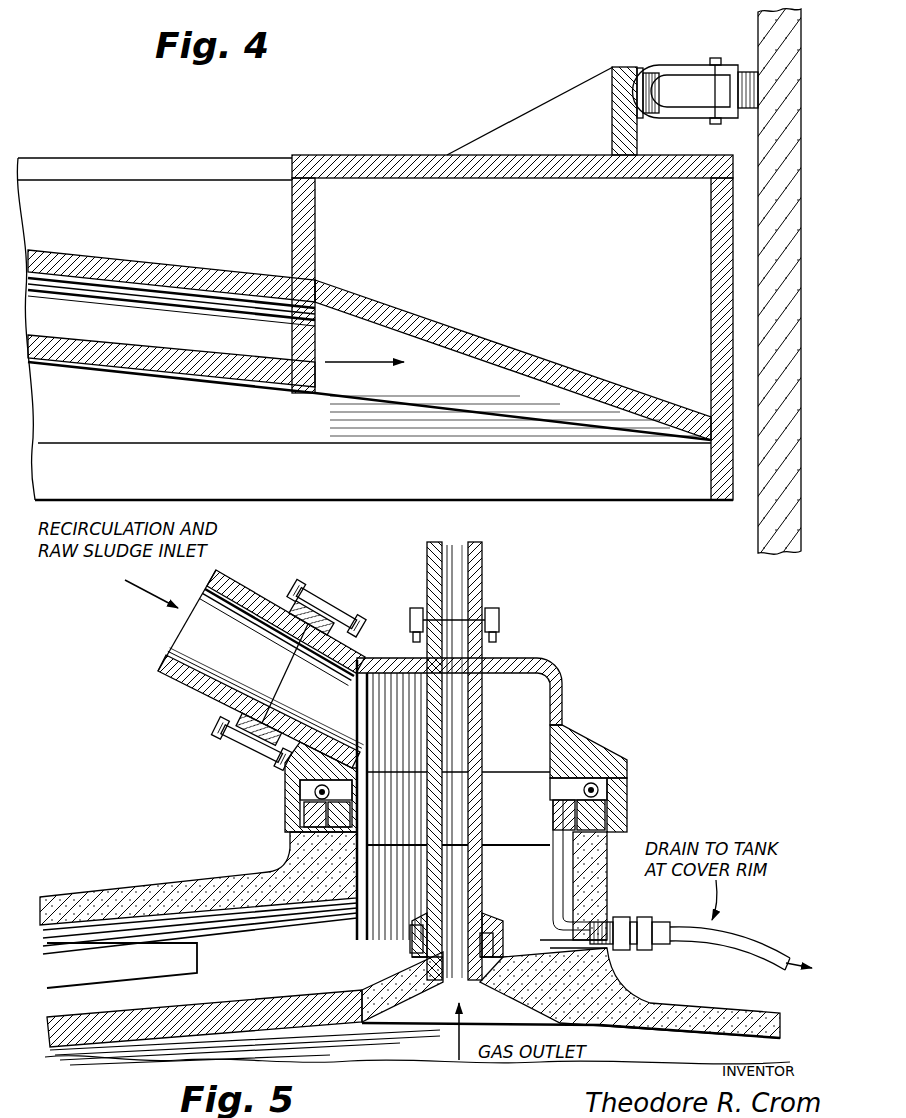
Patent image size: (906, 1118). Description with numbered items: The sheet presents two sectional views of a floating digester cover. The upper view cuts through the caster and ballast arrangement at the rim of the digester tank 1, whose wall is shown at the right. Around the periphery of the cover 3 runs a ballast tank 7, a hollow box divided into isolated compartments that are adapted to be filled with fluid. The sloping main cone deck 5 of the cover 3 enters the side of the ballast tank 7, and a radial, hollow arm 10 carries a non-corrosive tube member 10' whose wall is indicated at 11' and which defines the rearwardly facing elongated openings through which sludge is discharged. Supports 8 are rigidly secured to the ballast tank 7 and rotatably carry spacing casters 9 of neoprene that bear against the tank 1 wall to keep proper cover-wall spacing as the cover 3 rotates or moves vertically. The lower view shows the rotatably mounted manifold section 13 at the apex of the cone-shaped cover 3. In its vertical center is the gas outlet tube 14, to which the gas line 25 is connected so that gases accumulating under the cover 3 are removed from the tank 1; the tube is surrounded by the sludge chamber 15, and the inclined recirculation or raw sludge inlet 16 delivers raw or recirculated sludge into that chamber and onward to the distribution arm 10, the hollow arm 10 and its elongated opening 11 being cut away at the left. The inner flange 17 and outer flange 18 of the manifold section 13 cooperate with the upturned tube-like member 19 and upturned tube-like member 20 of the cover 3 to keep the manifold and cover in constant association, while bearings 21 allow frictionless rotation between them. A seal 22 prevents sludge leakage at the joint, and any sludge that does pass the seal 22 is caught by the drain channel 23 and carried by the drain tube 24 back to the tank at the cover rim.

In FIG. 4, the digester tank 1 is at (757, 44).
In FIG. 4, the cover 3 is at (80, 250).
In FIG. 5, the cover 3 is at (741, 1008).
In FIG. 4, the main cone deck 5 is at (181, 268).
In FIG. 4, the ballast tank 7 is at (428, 200).
In FIG. 4, the supports 8 is at (629, 67).
In FIG. 4, the spacing casters 9 is at (697, 67).
In FIG. 5, the radial hollow arm 10 is at (198, 893).
In FIG. 4, the tube member 10' is at (171, 352).
In FIG. 5, the tube member 10' is at (245, 1008).
In FIG. 5, the elongated opening 11 is at (112, 966).
In FIG. 4, the opening 11' is at (369, 399).
In FIG. 5, the manifold section 13 is at (598, 736).
In FIG. 5, the gas outlet tube 14 is at (466, 648).
In FIG. 5, the sludge chamber 15 is at (540, 695).
In FIG. 5, the recirculation or raw sludge inlet 16 is at (353, 680).
In FIG. 5, the inner flange 17 is at (410, 940).
In FIG. 5, the outer flange 18 is at (628, 808).
In FIG. 5, the upturned tube-like member 19 is at (424, 932).
In FIG. 5, the upturned tube-like member 20 is at (609, 894).
In FIG. 5, the bearings 21 is at (598, 782).
In FIG. 5, the seal 22 is at (524, 778).
In FIG. 5, the drain channel 23 is at (560, 808).
In FIG. 5, the drain tube 24 is at (757, 950).
In FIG. 5, the gas line 25 is at (482, 560).